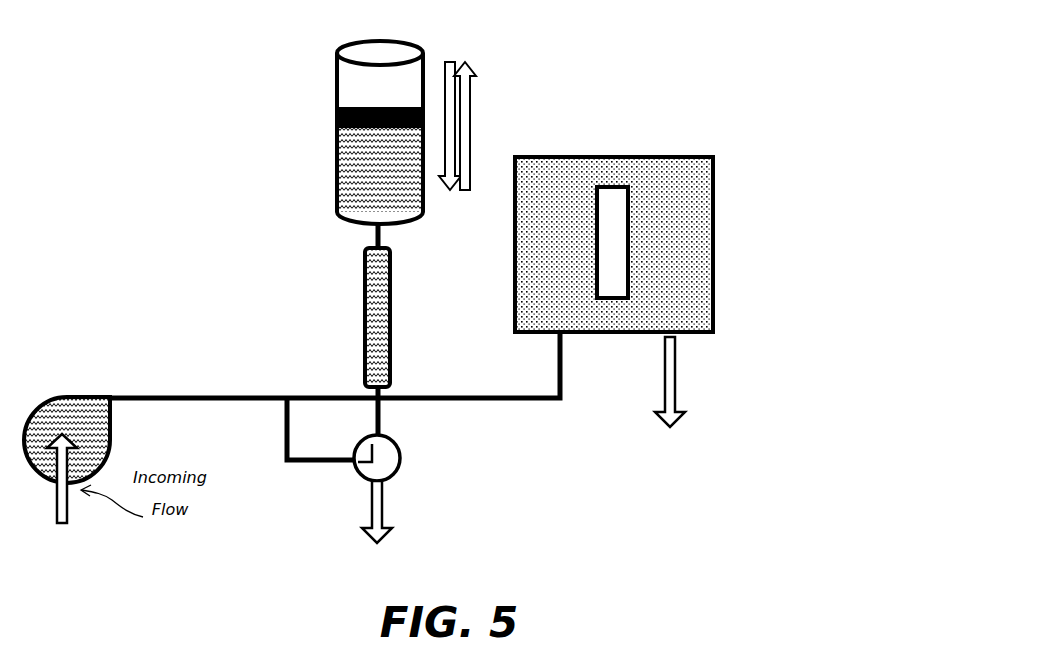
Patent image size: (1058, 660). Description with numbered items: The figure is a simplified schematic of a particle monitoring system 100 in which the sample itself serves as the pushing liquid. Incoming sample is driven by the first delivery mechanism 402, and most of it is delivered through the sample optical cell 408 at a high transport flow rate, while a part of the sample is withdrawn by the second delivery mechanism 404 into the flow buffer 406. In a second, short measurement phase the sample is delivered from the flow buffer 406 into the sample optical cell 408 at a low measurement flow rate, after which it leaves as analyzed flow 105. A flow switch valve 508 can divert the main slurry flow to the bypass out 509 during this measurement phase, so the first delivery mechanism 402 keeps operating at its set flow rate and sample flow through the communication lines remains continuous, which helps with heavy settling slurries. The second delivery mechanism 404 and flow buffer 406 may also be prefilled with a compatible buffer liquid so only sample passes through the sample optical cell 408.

The particle monitoring system 100 is at (642, 139).
The analyzed flow 105 is at (681, 372).
The first delivery mechanism 402 is at (61, 396).
The second delivery mechanism 404 is at (336, 150).
The flow buffer 406 is at (350, 328).
The sample optical cell 408 is at (708, 284).
The flow switch valve 508 is at (409, 481).
The bypass out 509 is at (353, 508).